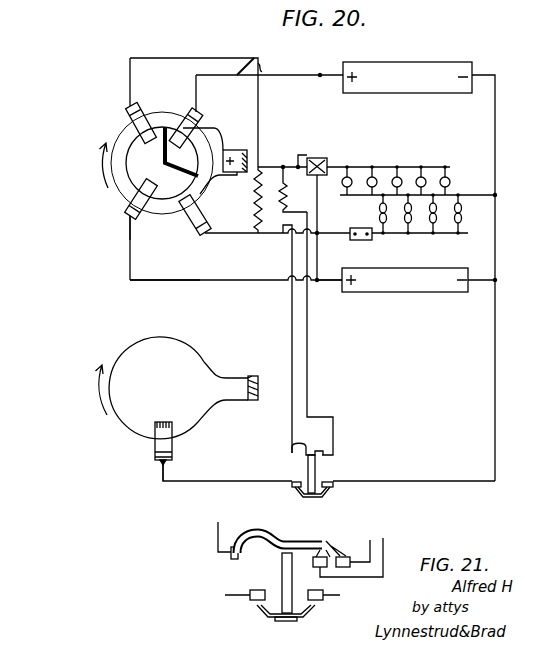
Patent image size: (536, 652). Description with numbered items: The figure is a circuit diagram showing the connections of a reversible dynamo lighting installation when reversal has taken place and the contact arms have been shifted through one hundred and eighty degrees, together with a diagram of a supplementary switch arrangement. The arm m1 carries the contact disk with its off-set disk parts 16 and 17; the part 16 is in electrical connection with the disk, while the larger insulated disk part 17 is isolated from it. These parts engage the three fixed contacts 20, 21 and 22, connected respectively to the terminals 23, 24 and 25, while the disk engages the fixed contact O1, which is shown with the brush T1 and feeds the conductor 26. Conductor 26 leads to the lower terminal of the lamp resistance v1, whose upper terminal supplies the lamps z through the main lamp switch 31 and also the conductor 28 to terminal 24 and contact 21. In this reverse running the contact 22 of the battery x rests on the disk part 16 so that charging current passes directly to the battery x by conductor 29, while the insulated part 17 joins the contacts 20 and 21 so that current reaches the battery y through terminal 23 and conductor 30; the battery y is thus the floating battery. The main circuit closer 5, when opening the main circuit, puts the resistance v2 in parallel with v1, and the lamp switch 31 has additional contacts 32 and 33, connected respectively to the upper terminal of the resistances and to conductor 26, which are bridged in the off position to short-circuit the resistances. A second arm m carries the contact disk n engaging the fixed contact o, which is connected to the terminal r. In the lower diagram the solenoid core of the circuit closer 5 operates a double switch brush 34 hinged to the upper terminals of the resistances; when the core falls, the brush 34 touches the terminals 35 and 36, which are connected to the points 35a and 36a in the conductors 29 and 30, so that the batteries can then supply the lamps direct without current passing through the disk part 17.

In FIG. 20, the conductor 28 is at (194, 56).
In FIG. 20, the conductor 29 is at (255, 56).
In FIG. 20, the point in conductor 29 35a is at (320, 74).
In FIG. 20, the battery x is at (388, 93).
In FIG. 20, the fixed contact 21 is at (150, 128).
In FIG. 20, the insulated disk part 17 is at (162, 163).
In FIG. 20, the disk part 16 is at (181, 151).
In FIG. 20, the terminal 24 is at (134, 118).
In FIG. 20, the terminal 25 is at (195, 118).
In FIG. 20, the fixed contact 20 is at (136, 199).
In FIG. 20, the terminal 23 is at (130, 215).
In FIG. 20, the brush T1 is at (195, 227).
In FIG. 20, the fixed contact 22 is at (213, 135).
In FIG. 20, the arm m1 is at (235, 154).
In FIG. 20, the fixed contact O1 is at (218, 194).
In FIG. 20, the lamp resistance v1 is at (248, 200).
In FIG. 20, the resistance v2 is at (293, 189).
In FIG. 20, the conductor 26 is at (226, 234).
In FIG. 20, the additional contact 32 is at (313, 157).
In FIG. 20, the main lamp switch 31 is at (328, 163).
In FIG. 20, the lamps z is at (409, 168).
In FIG. 20, the additional contact 33 is at (318, 176).
In FIG. 20, the battery y is at (412, 294).
In FIG. 20, the point in conductor 30 36a is at (323, 281).
In FIG. 20, the conductor 30 is at (203, 281).
In FIG. 20, the main circuit closer 5 is at (330, 461).
In FIG. 21, the main circuit closer 5 is at (272, 590).
In FIG. 20, the contact disk n is at (195, 415).
In FIG. 20, the arm m is at (243, 378).
In FIG. 20, the fixed contact o is at (173, 446).
In FIG. 20, the terminal r is at (173, 461).
In FIG. 21, the double switch brush 34 is at (308, 541).
In FIG. 21, the terminal 35 is at (323, 553).
In FIG. 21, the terminal 36 is at (343, 557).